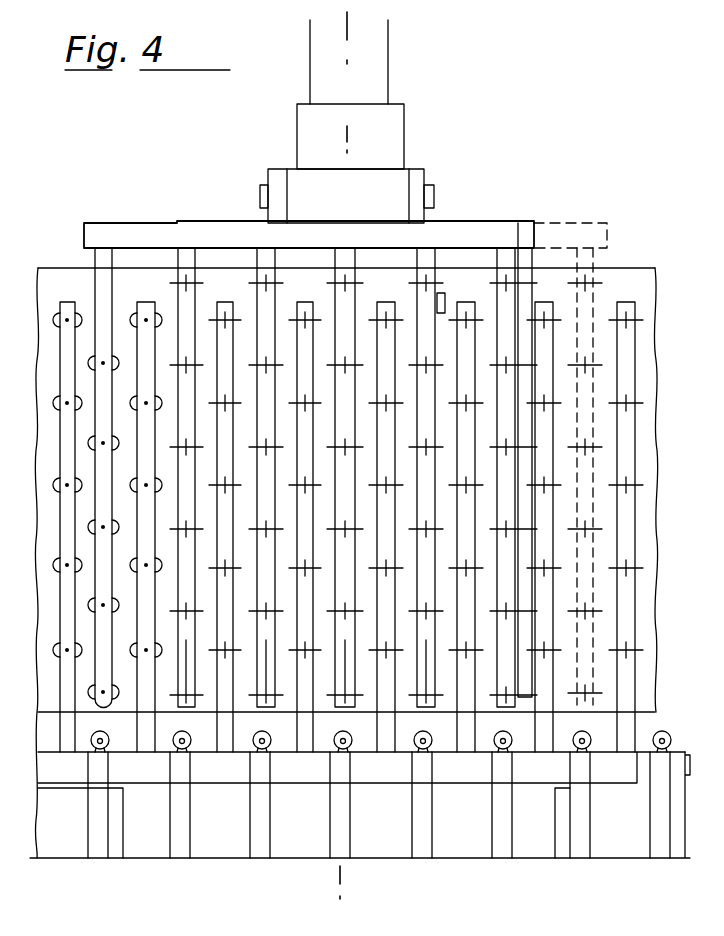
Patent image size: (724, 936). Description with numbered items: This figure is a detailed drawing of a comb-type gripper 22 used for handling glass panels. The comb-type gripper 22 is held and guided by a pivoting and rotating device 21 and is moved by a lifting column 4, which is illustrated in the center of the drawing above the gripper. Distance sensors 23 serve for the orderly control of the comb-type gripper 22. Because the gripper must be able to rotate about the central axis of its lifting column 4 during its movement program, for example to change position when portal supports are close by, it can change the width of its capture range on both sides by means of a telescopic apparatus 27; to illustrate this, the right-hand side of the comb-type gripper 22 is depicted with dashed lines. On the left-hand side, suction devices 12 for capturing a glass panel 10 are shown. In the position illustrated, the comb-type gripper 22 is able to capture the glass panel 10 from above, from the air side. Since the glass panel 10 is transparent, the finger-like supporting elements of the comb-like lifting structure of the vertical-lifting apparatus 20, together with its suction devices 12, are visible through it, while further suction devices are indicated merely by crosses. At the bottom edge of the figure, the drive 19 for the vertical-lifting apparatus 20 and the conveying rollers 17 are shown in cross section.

The lifting column 4 is at (388, 55).
The pivoting and rotating device 21 is at (404, 152).
The comb-type gripper 22 is at (489, 230).
The distance sensors 23 is at (441, 297).
The telescopic apparatus 27 is at (570, 223).
The glass panel 10 is at (622, 282).
The suction devices 12 is at (139, 308).
The conveying rollers 17 is at (499, 749).
The vertical-lifting apparatus 20 is at (542, 760).
The drive 19 is at (625, 815).